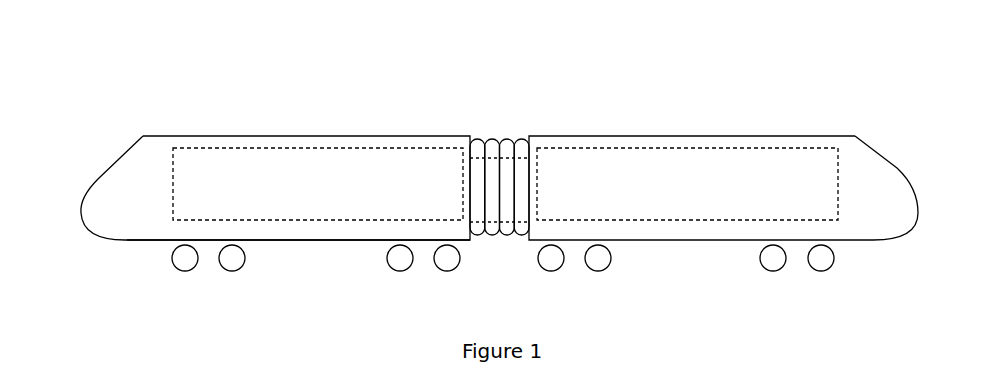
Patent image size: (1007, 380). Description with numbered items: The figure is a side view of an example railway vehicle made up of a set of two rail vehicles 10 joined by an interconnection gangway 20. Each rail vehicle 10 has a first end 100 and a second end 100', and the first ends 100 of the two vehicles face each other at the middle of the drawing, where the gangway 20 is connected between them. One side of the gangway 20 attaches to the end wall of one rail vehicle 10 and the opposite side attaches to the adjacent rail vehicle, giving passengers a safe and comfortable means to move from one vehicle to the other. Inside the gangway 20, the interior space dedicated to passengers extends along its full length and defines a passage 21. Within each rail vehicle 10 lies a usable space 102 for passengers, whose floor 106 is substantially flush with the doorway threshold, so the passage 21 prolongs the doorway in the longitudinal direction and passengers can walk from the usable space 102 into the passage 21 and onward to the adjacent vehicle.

The rail vehicle 10 is at (485, 170).
The first end 100 is at (485, 186).
The second end 100' is at (485, 148).
The usable space 102 is at (170, 202).
The floor 106 is at (333, 222).
The gangway 20 is at (490, 187).
The passage 21 is at (503, 222).